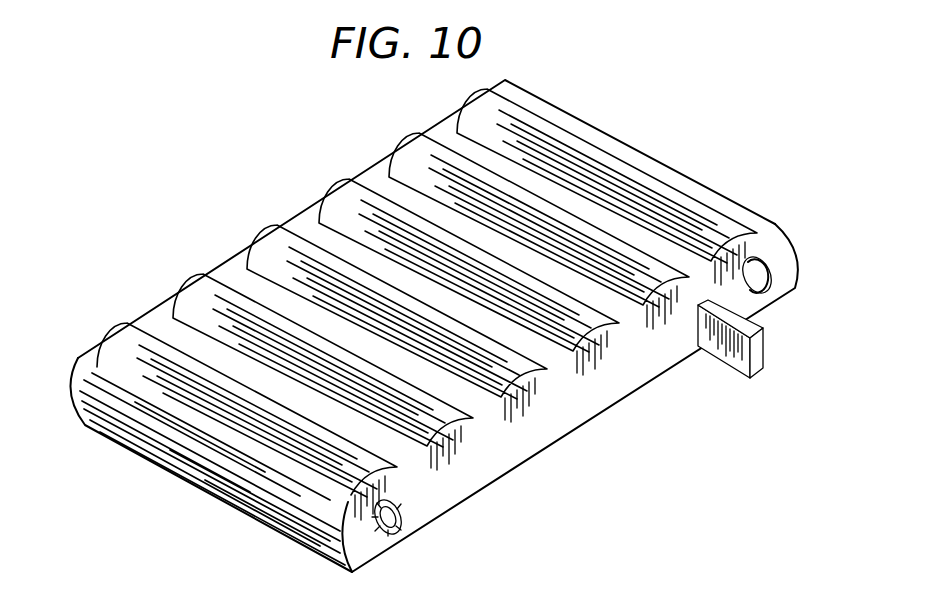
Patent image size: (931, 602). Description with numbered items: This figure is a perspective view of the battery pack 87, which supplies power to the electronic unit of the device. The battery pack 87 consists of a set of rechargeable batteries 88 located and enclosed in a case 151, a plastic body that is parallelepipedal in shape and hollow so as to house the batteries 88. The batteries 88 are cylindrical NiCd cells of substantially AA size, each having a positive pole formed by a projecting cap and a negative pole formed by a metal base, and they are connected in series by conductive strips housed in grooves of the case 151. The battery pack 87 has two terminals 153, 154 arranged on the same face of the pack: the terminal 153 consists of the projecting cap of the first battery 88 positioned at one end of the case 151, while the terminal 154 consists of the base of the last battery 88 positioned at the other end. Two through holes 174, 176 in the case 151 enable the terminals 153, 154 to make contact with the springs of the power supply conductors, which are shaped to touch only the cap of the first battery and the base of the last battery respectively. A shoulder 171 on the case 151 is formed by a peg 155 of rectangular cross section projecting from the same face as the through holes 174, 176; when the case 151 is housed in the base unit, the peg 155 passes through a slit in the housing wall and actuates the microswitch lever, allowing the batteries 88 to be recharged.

The battery pack 87 is at (670, 155).
The batteries 88 is at (407, 143).
The case 151 is at (247, 500).
The terminal 153 is at (400, 512).
The terminal 154 is at (772, 222).
The peg 155 is at (710, 343).
The shoulder 171 is at (762, 360).
The through hole 174 is at (388, 533).
The through hole 176 is at (762, 286).